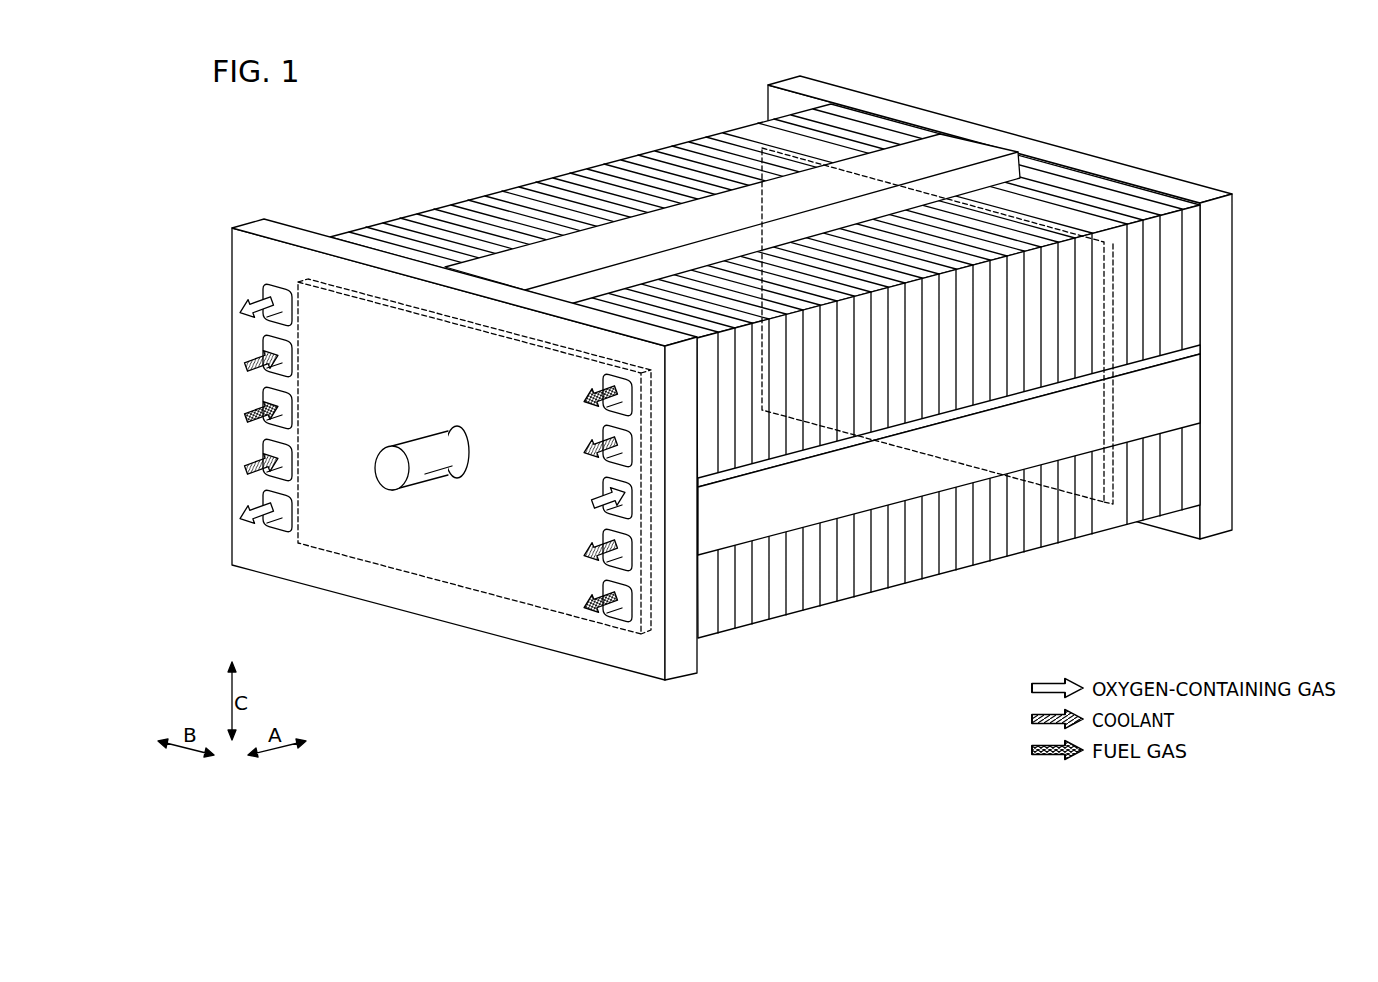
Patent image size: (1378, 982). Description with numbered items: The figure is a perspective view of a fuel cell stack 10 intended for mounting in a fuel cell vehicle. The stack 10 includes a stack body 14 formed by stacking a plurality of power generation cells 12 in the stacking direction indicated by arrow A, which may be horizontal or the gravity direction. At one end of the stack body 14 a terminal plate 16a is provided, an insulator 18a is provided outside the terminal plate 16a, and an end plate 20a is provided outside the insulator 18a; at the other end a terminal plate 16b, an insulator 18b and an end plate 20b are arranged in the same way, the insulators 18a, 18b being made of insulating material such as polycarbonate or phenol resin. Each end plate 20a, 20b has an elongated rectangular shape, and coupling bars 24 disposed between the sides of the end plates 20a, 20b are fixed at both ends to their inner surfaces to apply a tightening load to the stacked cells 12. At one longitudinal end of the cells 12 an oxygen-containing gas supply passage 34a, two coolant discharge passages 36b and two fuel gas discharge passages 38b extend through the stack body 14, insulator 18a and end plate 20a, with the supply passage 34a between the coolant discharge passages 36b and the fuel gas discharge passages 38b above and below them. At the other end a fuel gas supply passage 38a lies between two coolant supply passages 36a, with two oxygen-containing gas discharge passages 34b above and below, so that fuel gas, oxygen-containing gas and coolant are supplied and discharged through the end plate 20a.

The fuel cell stack 10 is at (346, 119).
The power generation cell 12 is at (468, 200).
The stack body 14 is at (815, 402).
The terminal plate 16a is at (515, 603).
The terminal plate 16b is at (1127, 314).
The insulator 18a is at (716, 641).
The insulator 18b is at (1183, 494).
The end plate 20a is at (450, 621).
The end plate 20b is at (1245, 233).
The coupling bar 24 is at (968, 150).
The oxygen-containing gas supply passage 34a is at (602, 488).
The oxygen-containing gas discharge passage 34b is at (262, 295).
The coolant supply passage 36a is at (262, 345).
The coolant discharge passage 36b is at (602, 437).
The fuel gas supply passage 38a is at (262, 396).
The fuel gas discharge passage 38b is at (602, 384).